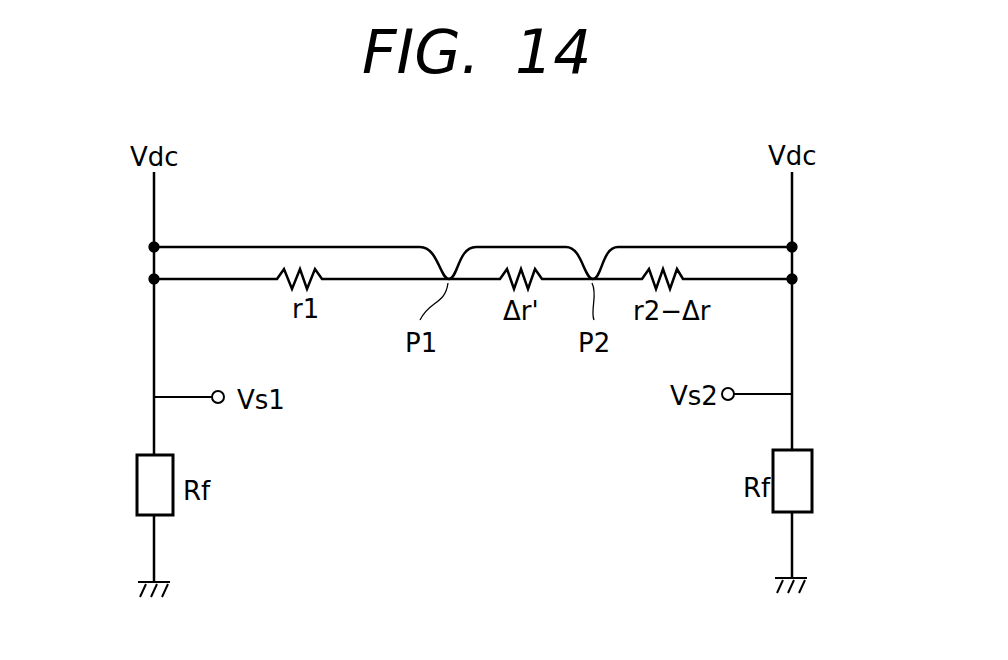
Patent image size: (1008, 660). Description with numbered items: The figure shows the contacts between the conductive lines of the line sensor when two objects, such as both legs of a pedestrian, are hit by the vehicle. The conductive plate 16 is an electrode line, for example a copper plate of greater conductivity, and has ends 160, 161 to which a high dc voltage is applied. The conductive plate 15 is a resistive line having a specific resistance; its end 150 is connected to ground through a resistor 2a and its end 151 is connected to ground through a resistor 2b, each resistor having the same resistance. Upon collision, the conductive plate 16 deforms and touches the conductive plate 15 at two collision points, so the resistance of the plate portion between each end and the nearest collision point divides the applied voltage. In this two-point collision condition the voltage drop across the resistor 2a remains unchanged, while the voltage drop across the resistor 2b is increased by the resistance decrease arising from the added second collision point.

The resistor 2a is at (137, 500).
The resistor 2b is at (812, 485).
The conductive plate 15 is at (478, 281).
The conductive plate 16 is at (668, 246).
The end 150 is at (152, 281).
The end 151 is at (797, 280).
The end 160 is at (150, 247).
The end 161 is at (797, 248).